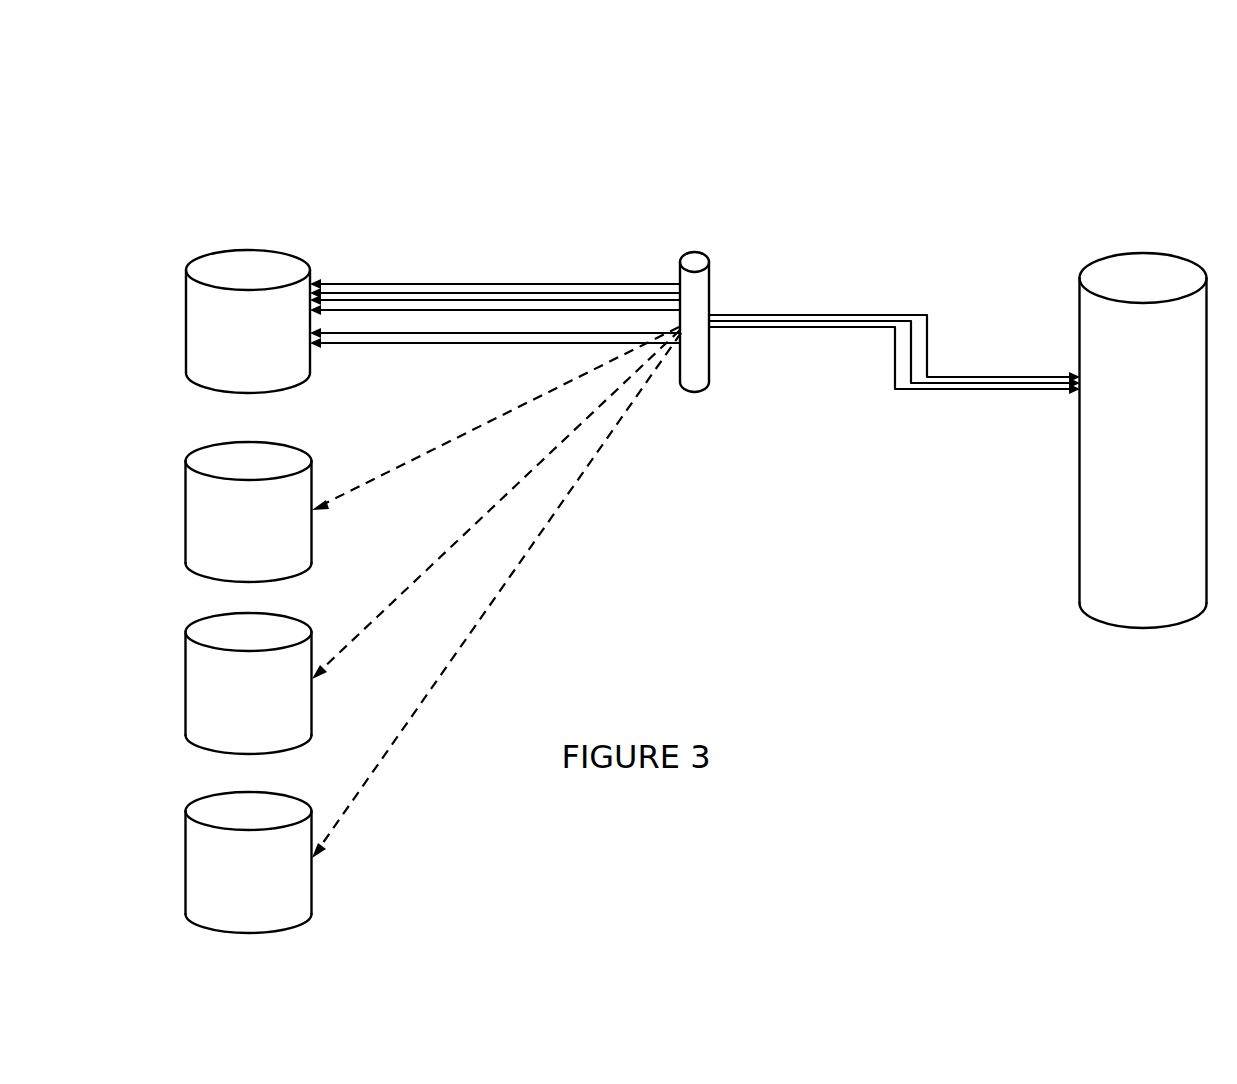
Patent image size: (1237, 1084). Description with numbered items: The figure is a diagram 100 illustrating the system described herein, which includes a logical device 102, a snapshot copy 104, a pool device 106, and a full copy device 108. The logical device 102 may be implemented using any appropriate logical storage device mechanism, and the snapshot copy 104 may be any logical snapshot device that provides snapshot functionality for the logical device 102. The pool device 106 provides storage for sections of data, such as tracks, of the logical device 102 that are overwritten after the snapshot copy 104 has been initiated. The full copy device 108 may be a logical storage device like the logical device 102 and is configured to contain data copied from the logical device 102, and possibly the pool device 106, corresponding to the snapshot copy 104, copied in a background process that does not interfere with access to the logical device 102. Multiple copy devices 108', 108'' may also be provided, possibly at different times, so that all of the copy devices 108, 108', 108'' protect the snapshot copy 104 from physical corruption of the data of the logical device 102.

The diagram 100 is at (957, 123).
The logical device 102 is at (248, 321).
The snapshot copy 104 is at (695, 392).
The pool device 106 is at (1143, 440).
The full copy device 108 is at (249, 512).
The copy device 108' is at (249, 683).
The copy device 108'' is at (249, 862).